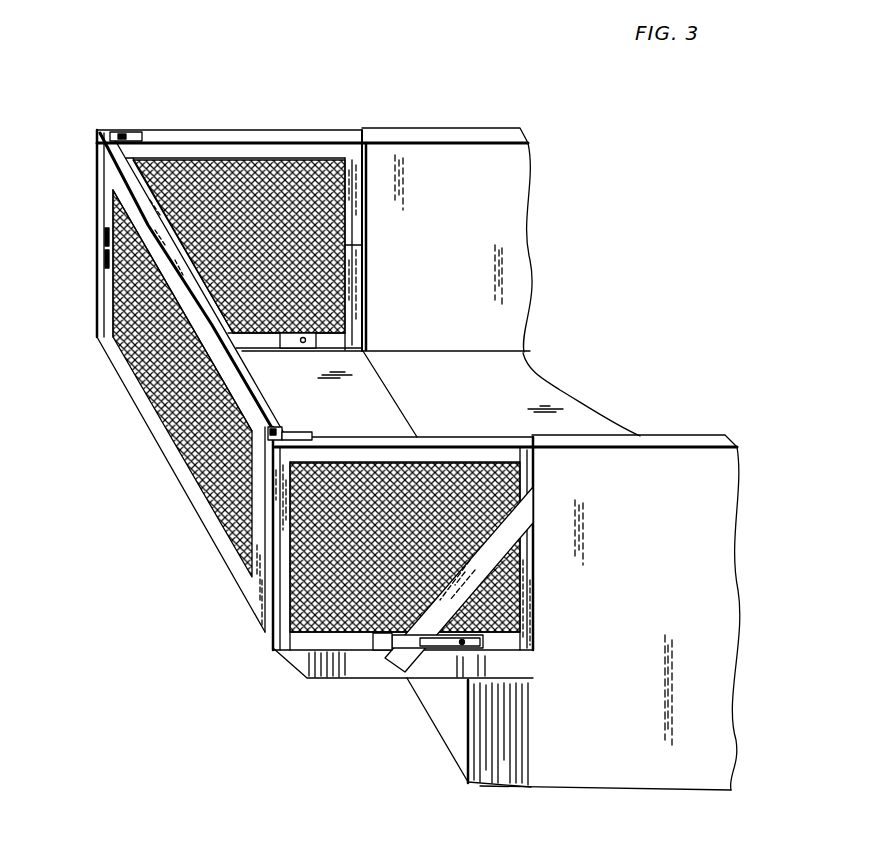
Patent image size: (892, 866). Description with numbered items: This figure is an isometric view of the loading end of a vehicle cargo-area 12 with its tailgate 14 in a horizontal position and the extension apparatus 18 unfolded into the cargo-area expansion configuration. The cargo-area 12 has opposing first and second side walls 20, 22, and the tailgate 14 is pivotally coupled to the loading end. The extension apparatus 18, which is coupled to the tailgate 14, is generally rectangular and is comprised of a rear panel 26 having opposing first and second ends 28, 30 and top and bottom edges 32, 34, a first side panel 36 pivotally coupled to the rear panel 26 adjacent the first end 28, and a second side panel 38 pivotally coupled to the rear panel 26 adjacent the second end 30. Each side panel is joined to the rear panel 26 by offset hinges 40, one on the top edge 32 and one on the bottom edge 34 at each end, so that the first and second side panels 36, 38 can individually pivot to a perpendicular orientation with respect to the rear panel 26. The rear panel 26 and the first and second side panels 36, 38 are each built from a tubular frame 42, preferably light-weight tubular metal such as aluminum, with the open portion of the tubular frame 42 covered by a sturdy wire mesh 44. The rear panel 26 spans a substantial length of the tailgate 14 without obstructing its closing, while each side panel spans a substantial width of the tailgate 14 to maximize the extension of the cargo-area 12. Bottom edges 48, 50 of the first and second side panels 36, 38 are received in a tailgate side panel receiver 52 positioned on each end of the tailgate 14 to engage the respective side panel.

The cargo-area 12 is at (515, 117).
The tailgate 14 is at (320, 680).
The extension apparatus 18 is at (88, 258).
The first side wall 20 is at (412, 128).
The second side wall 22 is at (687, 435).
The rear panel 26 is at (140, 400).
The first end 28 is at (97, 200).
The second end 30 is at (253, 547).
The top edge 32 is at (266, 408).
The bottom edge 34 is at (157, 452).
The first side panel 36 is at (208, 130).
The second side panel 38 is at (513, 435).
The offset hinge 40 is at (117, 132).
The tubular frame 42 is at (290, 138).
The wire mesh 44 is at (133, 360).
The bottom edge of first side panel 48 is at (356, 346).
The bottom edge of second side panel 50 is at (521, 644).
The tailgate side panel receiver 52 is at (284, 342).